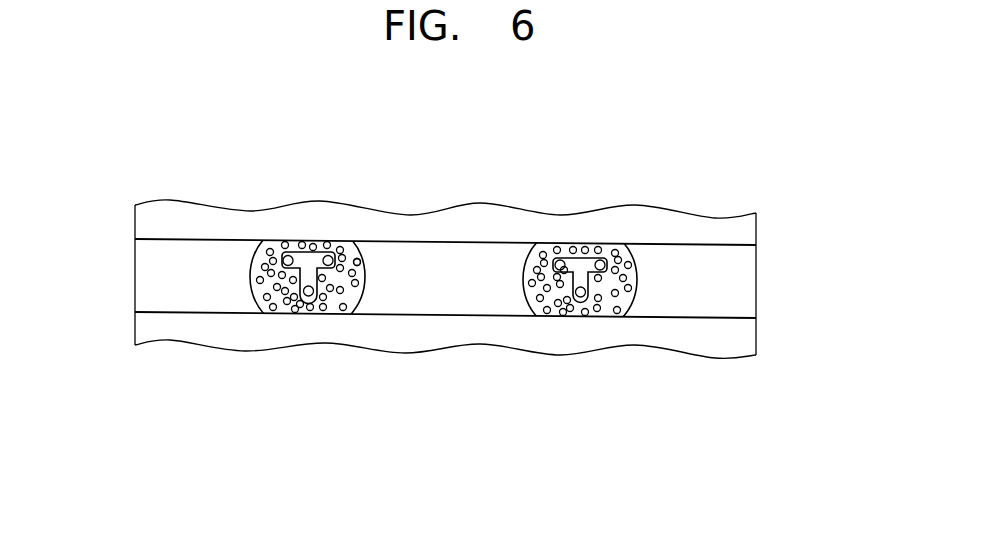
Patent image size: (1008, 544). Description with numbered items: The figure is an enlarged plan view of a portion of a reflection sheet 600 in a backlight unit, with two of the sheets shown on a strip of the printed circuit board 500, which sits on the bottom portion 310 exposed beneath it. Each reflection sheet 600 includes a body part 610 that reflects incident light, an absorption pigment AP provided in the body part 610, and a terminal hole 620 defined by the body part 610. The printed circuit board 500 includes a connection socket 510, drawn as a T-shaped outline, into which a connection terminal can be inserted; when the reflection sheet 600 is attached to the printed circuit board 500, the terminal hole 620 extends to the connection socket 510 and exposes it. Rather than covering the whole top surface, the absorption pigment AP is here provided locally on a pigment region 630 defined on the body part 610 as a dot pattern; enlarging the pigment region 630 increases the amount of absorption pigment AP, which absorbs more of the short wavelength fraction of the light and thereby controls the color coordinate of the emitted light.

The bottom portion 310 is at (145, 224).
The printed circuit board 500 is at (145, 278).
The connection socket 510 is at (308, 300).
The reflection sheet 600 is at (432, 256).
The body part 610 is at (442, 278).
The terminal hole 620 is at (293, 246).
The pigment region 630 is at (357, 262).
The absorption pigment AP is at (378, 209).